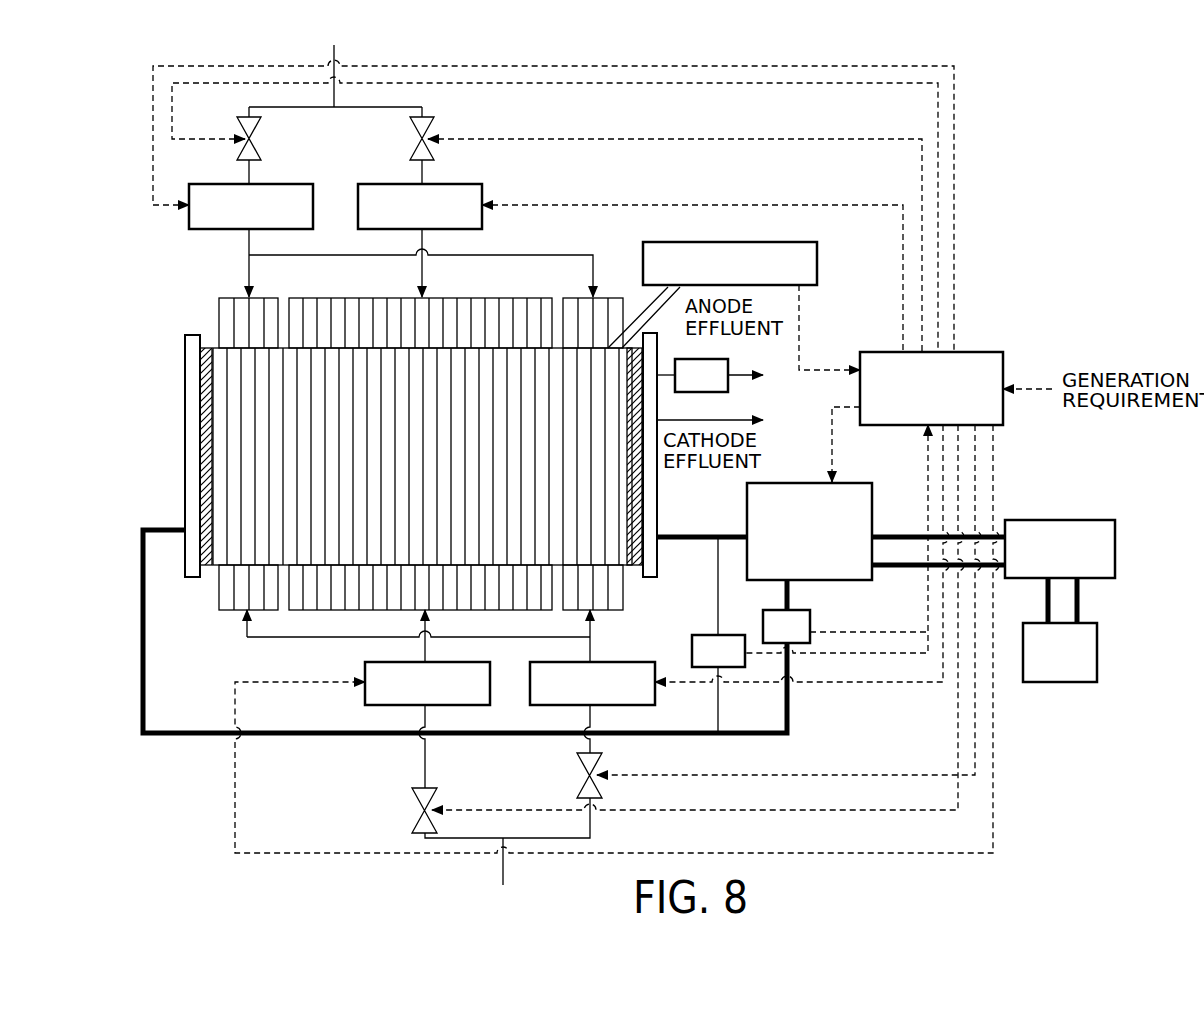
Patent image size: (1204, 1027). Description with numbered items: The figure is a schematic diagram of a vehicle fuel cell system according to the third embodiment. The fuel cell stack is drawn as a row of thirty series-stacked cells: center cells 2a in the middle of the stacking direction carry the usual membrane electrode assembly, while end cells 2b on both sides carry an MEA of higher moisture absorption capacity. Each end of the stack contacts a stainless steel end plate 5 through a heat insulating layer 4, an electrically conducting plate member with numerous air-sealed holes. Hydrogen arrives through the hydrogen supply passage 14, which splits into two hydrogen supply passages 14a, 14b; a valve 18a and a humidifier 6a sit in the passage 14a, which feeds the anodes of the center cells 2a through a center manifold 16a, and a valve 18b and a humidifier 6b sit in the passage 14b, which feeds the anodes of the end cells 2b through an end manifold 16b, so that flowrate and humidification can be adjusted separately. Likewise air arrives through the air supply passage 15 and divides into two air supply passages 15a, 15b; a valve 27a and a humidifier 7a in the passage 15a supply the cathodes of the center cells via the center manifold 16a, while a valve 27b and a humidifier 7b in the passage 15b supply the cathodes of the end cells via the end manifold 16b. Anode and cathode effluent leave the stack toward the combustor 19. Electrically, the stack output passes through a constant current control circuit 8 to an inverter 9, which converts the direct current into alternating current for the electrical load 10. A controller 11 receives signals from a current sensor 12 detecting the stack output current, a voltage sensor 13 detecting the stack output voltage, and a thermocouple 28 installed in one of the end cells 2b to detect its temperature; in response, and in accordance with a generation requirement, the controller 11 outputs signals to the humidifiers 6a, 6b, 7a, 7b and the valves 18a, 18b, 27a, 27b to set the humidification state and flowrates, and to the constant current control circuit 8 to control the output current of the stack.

The center cells 2a is at (443, 292).
The end cells 2b is at (230, 289).
The heat insulating layer 4 is at (200, 365).
The end plate 5 is at (190, 335).
The humidifier 6a is at (386, 184).
The humidifier 6b is at (283, 183).
The humidifier 7a is at (365, 697).
The humidifier 7b is at (655, 697).
The constant current control circuit 8 is at (855, 483).
The inverter 9 is at (1075, 520).
The electrical load 10 is at (1097, 640).
The controller 11 is at (960, 352).
The current sensor 12 is at (790, 610).
The voltage sensor 13 is at (700, 635).
The hydrogen supply passage 14 is at (334, 100).
The hydrogen supply passage 14a is at (422, 170).
The hydrogen supply passage 14b is at (250, 170).
The air supply passage 15 is at (503, 872).
The air supply passage 15a is at (424, 768).
The air supply passage 15b is at (590, 748).
The center manifold 16a is at (357, 297).
The end manifold 16b is at (602, 297).
The valve 18a is at (430, 125).
The valve 18b is at (248, 139).
The combustor 19 is at (728, 365).
The valve 27a is at (412, 815).
The valve 27b is at (603, 793).
The thermocouple 28 is at (817, 262).